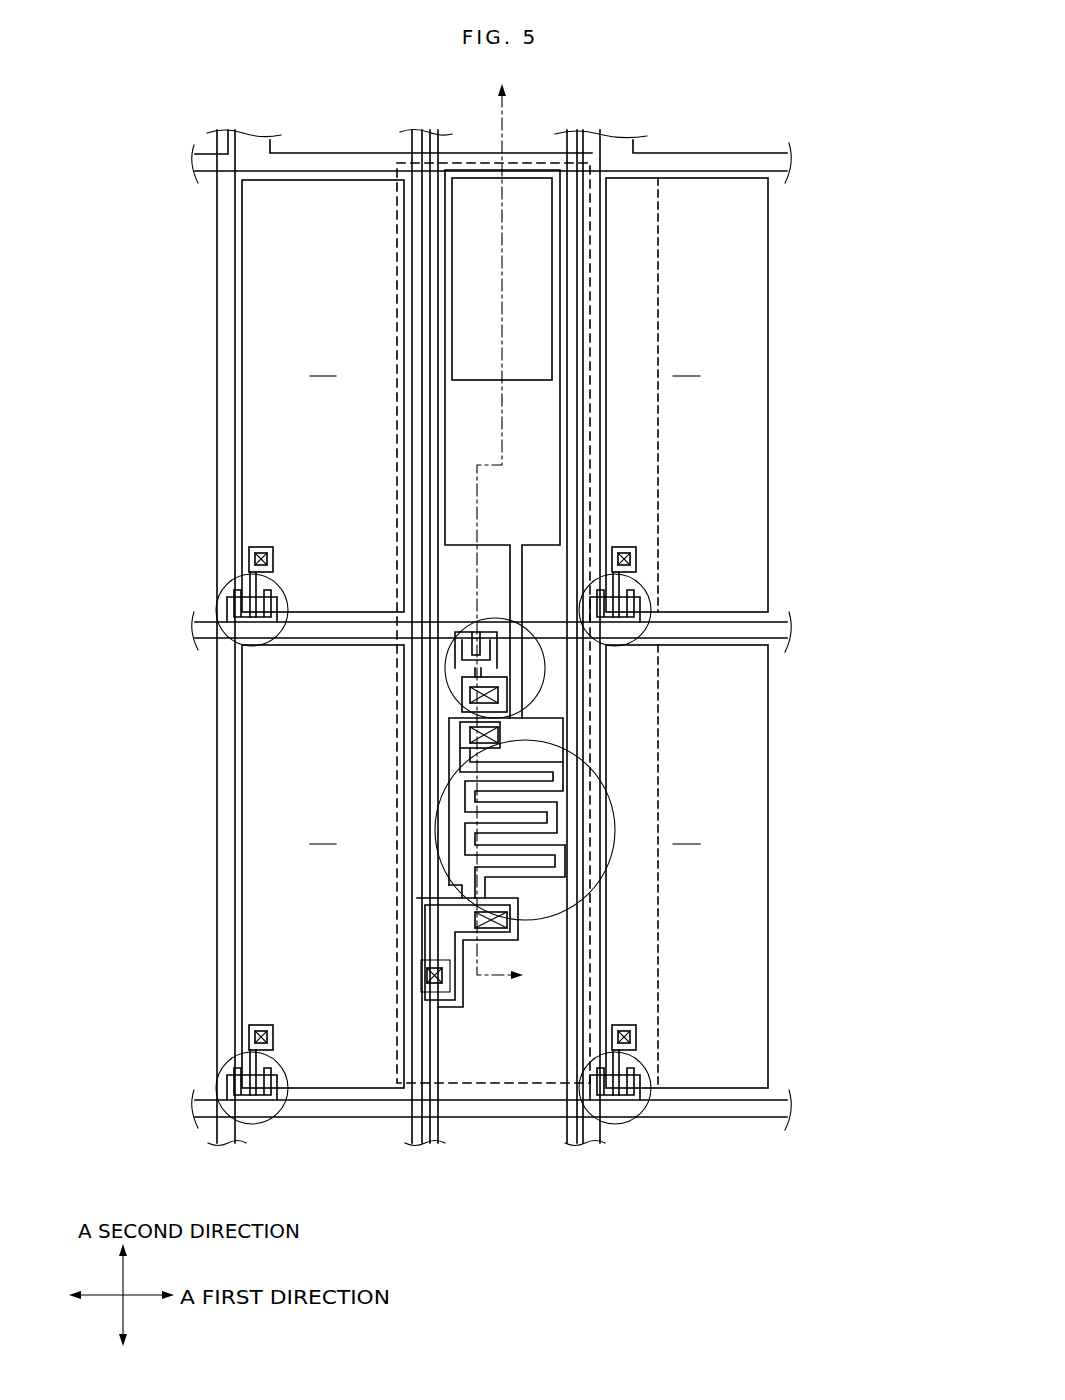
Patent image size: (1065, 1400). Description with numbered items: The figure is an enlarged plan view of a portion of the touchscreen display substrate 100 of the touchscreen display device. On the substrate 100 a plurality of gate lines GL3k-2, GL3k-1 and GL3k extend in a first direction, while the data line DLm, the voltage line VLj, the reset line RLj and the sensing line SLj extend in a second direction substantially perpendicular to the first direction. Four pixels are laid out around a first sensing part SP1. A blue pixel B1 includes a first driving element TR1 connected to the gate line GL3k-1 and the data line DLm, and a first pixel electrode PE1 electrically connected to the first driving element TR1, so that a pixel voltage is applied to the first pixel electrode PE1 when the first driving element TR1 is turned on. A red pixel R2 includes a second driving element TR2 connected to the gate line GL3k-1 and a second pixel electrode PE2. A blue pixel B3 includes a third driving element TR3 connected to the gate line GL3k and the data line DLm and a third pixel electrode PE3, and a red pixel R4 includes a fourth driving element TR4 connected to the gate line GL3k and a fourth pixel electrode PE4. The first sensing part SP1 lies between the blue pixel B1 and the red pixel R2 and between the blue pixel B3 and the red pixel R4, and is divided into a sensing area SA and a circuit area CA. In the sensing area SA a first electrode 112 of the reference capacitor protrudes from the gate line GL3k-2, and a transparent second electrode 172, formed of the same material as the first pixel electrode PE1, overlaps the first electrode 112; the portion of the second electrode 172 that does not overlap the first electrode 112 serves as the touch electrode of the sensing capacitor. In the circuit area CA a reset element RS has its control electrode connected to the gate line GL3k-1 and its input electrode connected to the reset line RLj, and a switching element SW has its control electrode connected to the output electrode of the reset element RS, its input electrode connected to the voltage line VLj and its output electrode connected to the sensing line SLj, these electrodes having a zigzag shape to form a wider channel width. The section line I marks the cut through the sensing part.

The touchscreen display substrate 100 is at (341, 128).
The first electrode 112 is at (470, 200).
The transparent second electrode 172 is at (552, 178).
The (3k-2)-th gate line GL3k-2 is at (792, 158).
The (3k-1)-th gate line GL3k-1 is at (792, 628).
The (3k)-th gate line GL3k is at (792, 1106).
The m-th data line DLm is at (227, 1146).
The j-th voltage line VLj is at (415, 1146).
The j-th reset line RLj is at (435, 1146).
The j-th sensing line SLj is at (574, 1146).
The first sensing part SP1 is at (509, 1090).
The first pixel electrode PE1 is at (242, 357).
The second pixel electrode PE2 is at (768, 377).
The third pixel electrode PE3 is at (242, 915).
The fourth pixel electrode PE4 is at (768, 830).
The blue pixel B1 is at (323, 365).
The blue pixel B3 is at (323, 833).
The red pixel R2 is at (686, 365).
The red pixel R4 is at (686, 833).
The first driving element TR1 is at (240, 585).
The second driving element TR2 is at (650, 622).
The third driving element TR3 is at (240, 1063).
The fourth driving element TR4 is at (650, 1105).
The reset element RS is at (455, 652).
The switching element SW is at (460, 775).
The sensing area SA is at (660, 418).
The circuit area CA is at (660, 893).
The section line I-I' I is at (507, 535).